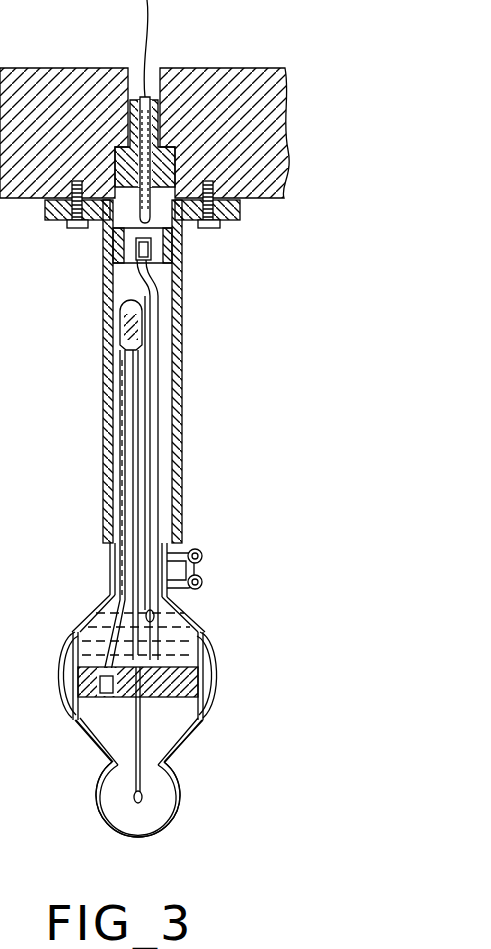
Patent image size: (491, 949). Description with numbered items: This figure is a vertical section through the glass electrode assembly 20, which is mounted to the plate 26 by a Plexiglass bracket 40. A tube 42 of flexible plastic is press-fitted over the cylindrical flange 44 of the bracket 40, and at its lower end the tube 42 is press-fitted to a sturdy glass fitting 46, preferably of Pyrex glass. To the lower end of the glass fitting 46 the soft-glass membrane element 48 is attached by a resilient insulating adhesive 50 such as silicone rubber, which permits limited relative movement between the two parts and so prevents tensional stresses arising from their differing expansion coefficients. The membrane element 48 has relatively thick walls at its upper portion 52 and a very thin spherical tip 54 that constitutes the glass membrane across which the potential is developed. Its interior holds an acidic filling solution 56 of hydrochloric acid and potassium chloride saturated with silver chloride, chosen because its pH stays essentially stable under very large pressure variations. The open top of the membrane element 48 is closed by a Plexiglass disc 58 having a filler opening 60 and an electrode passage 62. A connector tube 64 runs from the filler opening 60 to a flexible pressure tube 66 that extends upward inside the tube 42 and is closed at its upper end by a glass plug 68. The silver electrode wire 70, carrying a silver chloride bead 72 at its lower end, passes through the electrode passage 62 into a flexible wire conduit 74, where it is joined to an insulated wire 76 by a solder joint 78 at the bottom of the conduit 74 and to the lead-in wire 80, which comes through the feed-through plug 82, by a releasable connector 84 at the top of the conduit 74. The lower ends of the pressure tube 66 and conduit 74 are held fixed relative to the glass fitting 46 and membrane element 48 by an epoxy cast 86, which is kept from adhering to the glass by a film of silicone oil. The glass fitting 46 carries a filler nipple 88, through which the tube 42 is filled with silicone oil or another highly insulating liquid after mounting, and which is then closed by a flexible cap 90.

The glass electrode assembly 20 is at (102, 832).
The plate 26 is at (228, 82).
The Plexiglass bracket 40 is at (240, 212).
The tube 42 is at (182, 342).
The cylindrical flange 44 is at (174, 268).
The glass fitting 46 is at (112, 557).
The glass membrane element 48 is at (192, 741).
The resilient insulating adhesive 50 is at (68, 660).
The upper portion 52 is at (205, 688).
The spherical tip 54 is at (152, 838).
The filling solution 56 is at (163, 750).
The Plexiglass disc 58 is at (78, 722).
The filler opening 60 is at (92, 680).
The electrode passage 62 is at (143, 692).
The connector tube 64 is at (105, 652).
The pressure tube 66 is at (130, 432).
The glass plug 68 is at (124, 340).
The silver electrode wire 70 is at (110, 757).
The silver chloride bead 72 is at (143, 797).
The flexible wire conduit 74 is at (155, 437).
The insulated wire 76 is at (153, 392).
The solder joint 78 is at (190, 620).
The lead-in wire 80 is at (160, 236).
The feed-through plug 82 is at (153, 166).
The releasable connector 84 is at (133, 257).
The epoxy cast 86 is at (102, 632).
The filler nipple 88 is at (203, 578).
The flexible cap 90 is at (202, 555).